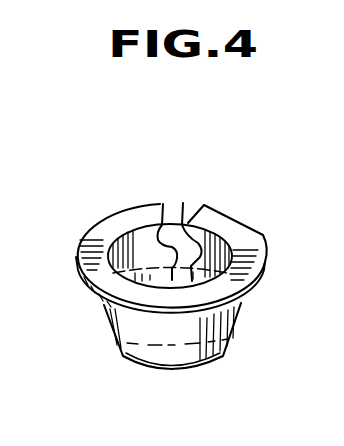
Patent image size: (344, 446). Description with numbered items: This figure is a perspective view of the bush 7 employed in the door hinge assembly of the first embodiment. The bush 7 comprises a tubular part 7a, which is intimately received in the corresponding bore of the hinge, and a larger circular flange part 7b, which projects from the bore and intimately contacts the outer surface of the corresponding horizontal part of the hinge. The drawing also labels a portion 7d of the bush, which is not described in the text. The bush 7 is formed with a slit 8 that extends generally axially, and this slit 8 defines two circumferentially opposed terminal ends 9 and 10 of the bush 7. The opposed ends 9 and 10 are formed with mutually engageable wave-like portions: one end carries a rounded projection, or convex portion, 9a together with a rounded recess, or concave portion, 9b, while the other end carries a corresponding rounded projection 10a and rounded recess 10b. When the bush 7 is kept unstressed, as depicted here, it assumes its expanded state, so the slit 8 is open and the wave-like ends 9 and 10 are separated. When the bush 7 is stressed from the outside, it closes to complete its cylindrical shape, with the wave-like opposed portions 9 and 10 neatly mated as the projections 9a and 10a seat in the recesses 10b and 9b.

The bush 7 is at (266, 247).
The tubular part 7a is at (250, 307).
The larger circular flange part 7b is at (78, 257).
The cylindrical body 7d is at (223, 352).
The slit 8 is at (181, 270).
The terminal end 9 is at (181, 141).
The rounded projection 9a is at (173, 235).
The rounded recess 9b is at (162, 209).
The terminal end 10 is at (318, 141).
The rounded projection 10a is at (183, 232).
The rounded recess 10b is at (212, 232).